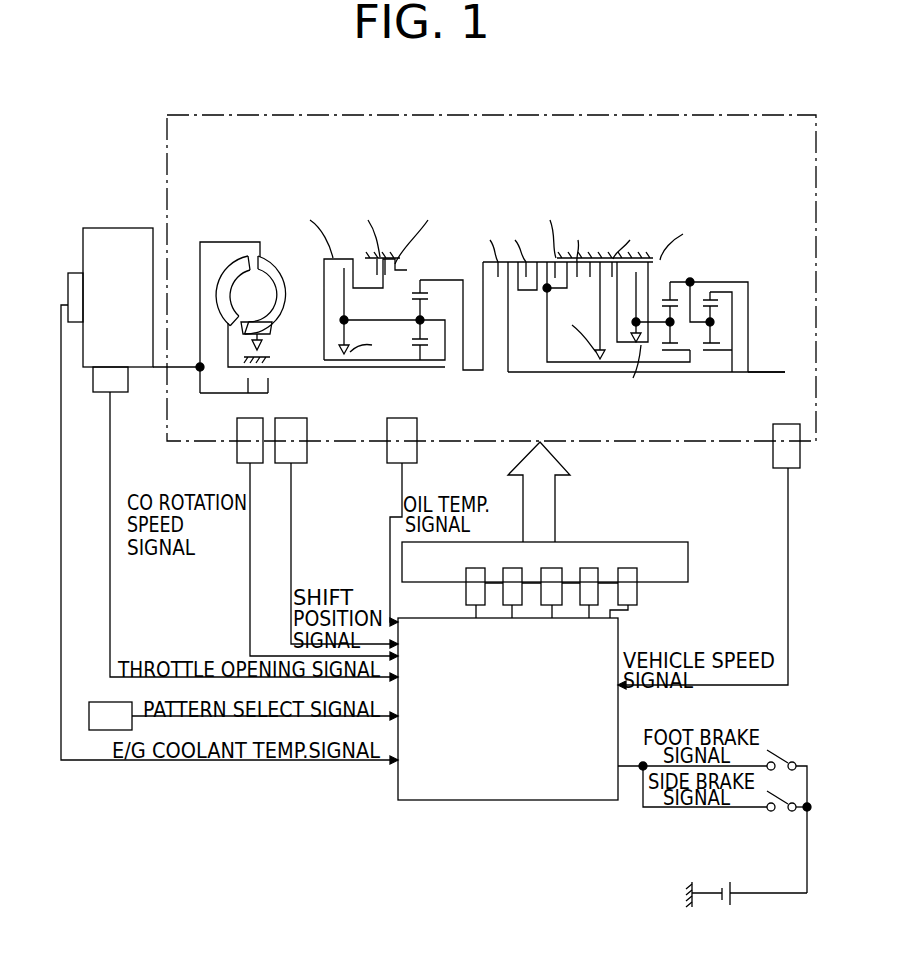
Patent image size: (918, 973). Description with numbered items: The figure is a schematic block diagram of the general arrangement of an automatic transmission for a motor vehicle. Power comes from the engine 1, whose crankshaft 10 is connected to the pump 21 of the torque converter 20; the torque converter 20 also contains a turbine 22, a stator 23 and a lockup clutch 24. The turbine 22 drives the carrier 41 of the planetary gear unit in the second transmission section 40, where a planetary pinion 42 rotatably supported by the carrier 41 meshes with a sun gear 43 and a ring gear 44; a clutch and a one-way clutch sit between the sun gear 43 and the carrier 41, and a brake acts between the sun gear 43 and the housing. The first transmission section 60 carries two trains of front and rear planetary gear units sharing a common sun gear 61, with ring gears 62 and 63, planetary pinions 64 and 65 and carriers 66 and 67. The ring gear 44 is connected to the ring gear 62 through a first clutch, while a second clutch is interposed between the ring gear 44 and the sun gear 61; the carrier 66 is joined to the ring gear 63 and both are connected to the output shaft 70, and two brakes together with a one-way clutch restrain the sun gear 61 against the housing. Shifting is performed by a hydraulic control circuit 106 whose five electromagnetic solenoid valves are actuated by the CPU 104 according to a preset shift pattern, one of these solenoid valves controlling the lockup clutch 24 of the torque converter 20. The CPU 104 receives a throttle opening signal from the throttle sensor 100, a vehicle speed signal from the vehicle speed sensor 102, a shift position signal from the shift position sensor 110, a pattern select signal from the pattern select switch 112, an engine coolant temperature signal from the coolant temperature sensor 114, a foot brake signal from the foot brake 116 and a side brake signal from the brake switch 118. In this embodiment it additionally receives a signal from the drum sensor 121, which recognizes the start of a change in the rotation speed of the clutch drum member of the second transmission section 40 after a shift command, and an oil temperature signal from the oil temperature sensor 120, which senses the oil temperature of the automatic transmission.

The engine 1 is at (103, 228).
The crankshaft 10 is at (183, 368).
The torque converter 20 is at (322, 285).
The pump 21 is at (283, 272).
The turbine 22 is at (240, 274).
The stator 23 is at (268, 334).
The lockup clutch 24 is at (240, 393).
The second transmission section 40 is at (386, 276).
The carrier 41 is at (433, 318).
The planetary pinion 42 is at (410, 300).
The sun gear 43 is at (413, 352).
The ring gear 44 is at (402, 228).
The first transmission section 60 is at (633, 280).
The common sun gear 61 is at (720, 352).
The ring gear 62 is at (716, 299).
The ring gear 63 is at (691, 281).
The planetary pinion 64 is at (719, 303).
The planetary pinion 65 is at (672, 352).
The carrier 66 is at (713, 325).
The carrier 67 is at (662, 300).
The output shaft 70 is at (766, 372).
The throttle sensor 100 is at (117, 392).
The vehicle speed sensor 102 is at (771, 455).
The CPU 104 is at (507, 800).
The hydraulic control circuit 106 is at (688, 562).
The shift position sensor 110 is at (307, 450).
The pattern select switch 112 is at (97, 702).
The coolant temperature sensor 114 is at (77, 272).
The foot brake 116 is at (778, 757).
The brake switch 118 is at (781, 810).
The oil temperature sensor 120 is at (417, 448).
The C0 drum sensor 121 is at (237, 450).